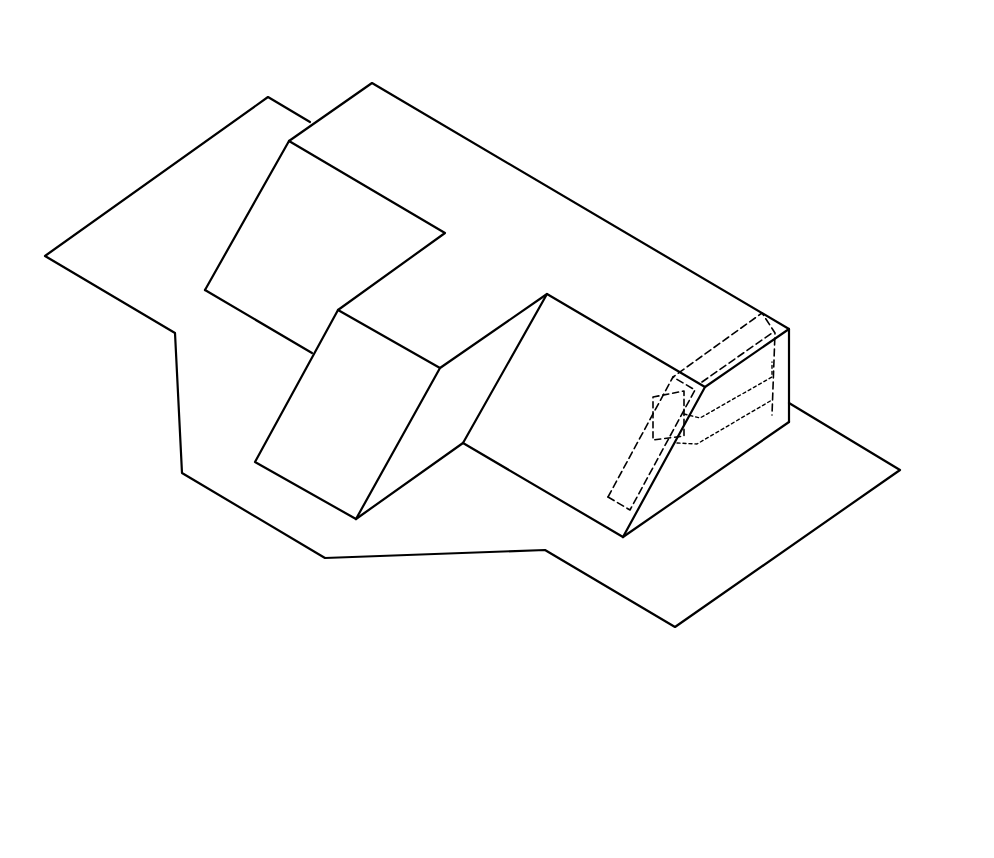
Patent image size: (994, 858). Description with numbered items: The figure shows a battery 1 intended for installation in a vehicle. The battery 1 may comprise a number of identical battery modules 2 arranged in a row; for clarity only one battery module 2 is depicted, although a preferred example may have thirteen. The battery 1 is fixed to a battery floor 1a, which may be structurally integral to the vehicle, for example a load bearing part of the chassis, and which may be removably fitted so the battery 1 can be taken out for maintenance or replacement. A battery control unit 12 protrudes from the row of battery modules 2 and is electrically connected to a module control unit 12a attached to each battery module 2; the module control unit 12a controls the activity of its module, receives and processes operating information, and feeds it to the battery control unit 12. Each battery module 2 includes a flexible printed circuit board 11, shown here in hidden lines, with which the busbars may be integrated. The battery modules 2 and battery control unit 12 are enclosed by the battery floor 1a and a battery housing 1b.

The battery 1 is at (511, 138).
The battery floor 1a is at (505, 543).
The battery housing 1b is at (387, 103).
The battery module 2 is at (760, 313).
The flexible printed circuit board 11 is at (736, 416).
The battery control unit 12 is at (383, 325).
The module control unit 12a is at (654, 418).